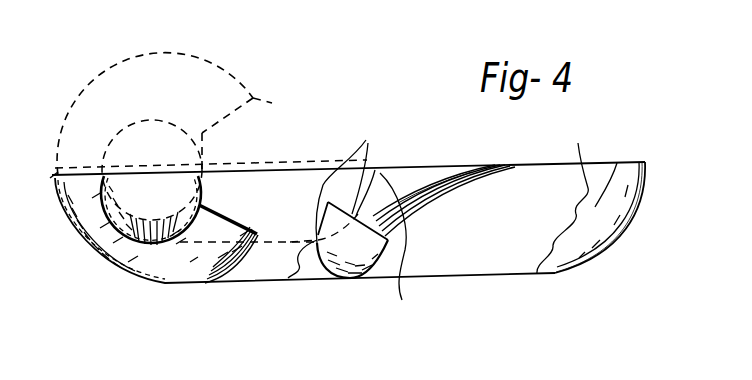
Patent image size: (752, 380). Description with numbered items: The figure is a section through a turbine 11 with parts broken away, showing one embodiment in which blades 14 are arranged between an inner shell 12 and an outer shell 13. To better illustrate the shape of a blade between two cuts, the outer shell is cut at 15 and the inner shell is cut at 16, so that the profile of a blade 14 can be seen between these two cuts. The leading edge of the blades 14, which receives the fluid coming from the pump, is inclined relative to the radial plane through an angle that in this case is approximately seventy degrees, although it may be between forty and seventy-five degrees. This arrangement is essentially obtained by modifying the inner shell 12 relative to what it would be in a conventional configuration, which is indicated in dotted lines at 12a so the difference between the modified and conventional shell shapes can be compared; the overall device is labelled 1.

The hinge device 1 is at (125, 61).
The turbine 11 is at (271, 171).
The inner shell 12 is at (204, 196).
The conventional inner shell configuration 12a is at (152, 225).
The outer shell 13 is at (108, 256).
The blades 14 is at (163, 268).
The cut in the outer shell 15 is at (599, 193).
The cut in the inner shell 16 is at (441, 174).